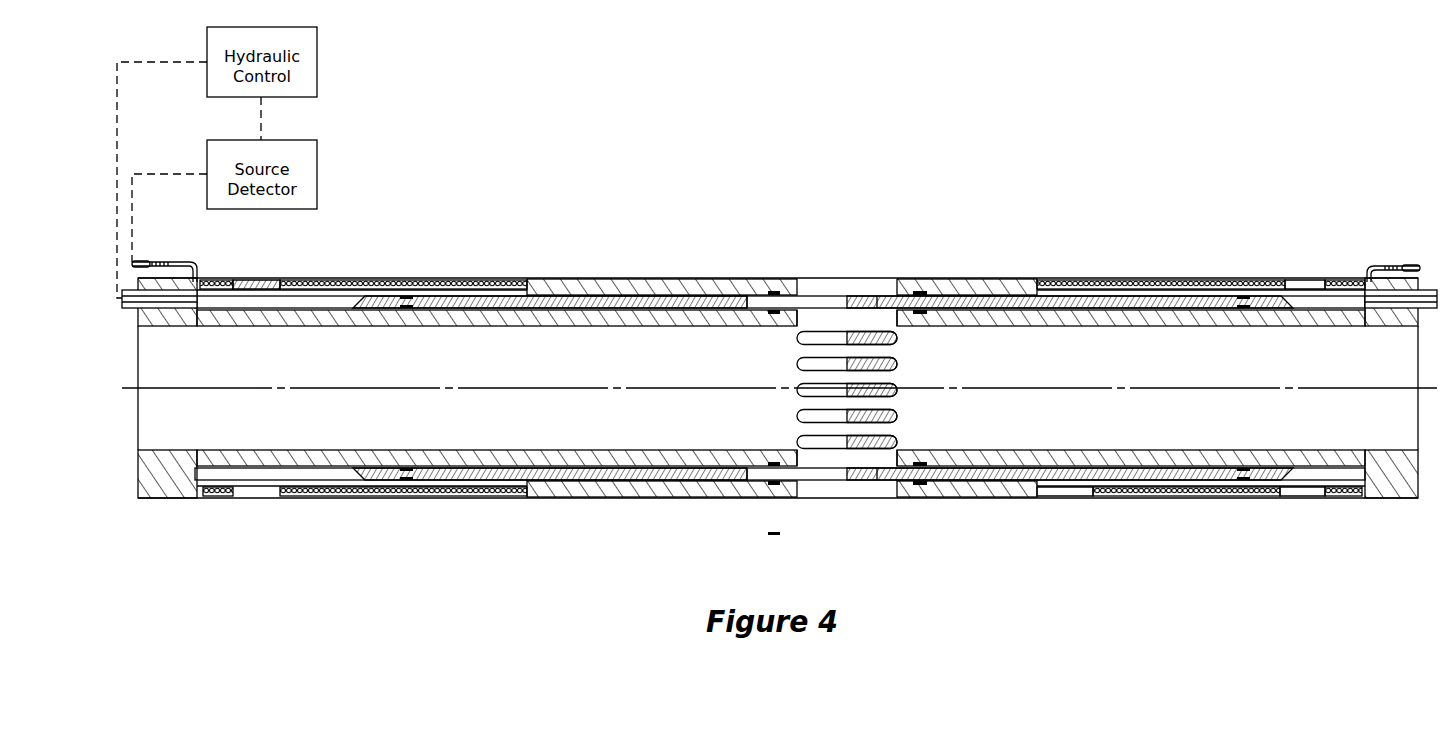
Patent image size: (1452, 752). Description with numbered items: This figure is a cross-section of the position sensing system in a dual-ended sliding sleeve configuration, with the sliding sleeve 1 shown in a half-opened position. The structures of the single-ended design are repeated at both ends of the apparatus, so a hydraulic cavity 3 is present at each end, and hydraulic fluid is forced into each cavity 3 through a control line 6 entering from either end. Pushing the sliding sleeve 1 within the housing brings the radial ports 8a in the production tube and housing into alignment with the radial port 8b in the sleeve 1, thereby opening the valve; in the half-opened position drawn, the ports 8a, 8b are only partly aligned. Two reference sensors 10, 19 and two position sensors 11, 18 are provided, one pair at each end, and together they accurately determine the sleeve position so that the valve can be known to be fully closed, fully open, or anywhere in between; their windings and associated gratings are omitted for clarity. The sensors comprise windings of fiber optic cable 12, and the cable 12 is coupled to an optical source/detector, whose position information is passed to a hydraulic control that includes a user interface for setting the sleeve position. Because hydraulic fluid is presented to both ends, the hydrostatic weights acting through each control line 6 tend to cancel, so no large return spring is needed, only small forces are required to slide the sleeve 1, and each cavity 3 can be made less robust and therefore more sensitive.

The sliding sleeve 1 is at (624, 293).
The hydraulic cavity 3 is at (265, 300).
The control line 6 is at (130, 299).
The radial ports 8a is at (842, 290).
The radial port 8b is at (758, 292).
The reference sensor 10 is at (253, 282).
The position sensor 11 is at (372, 282).
The fiber optic cable 12 is at (195, 282).
The position sensor 18 is at (1188, 290).
The reference sensor 19 is at (1338, 290).